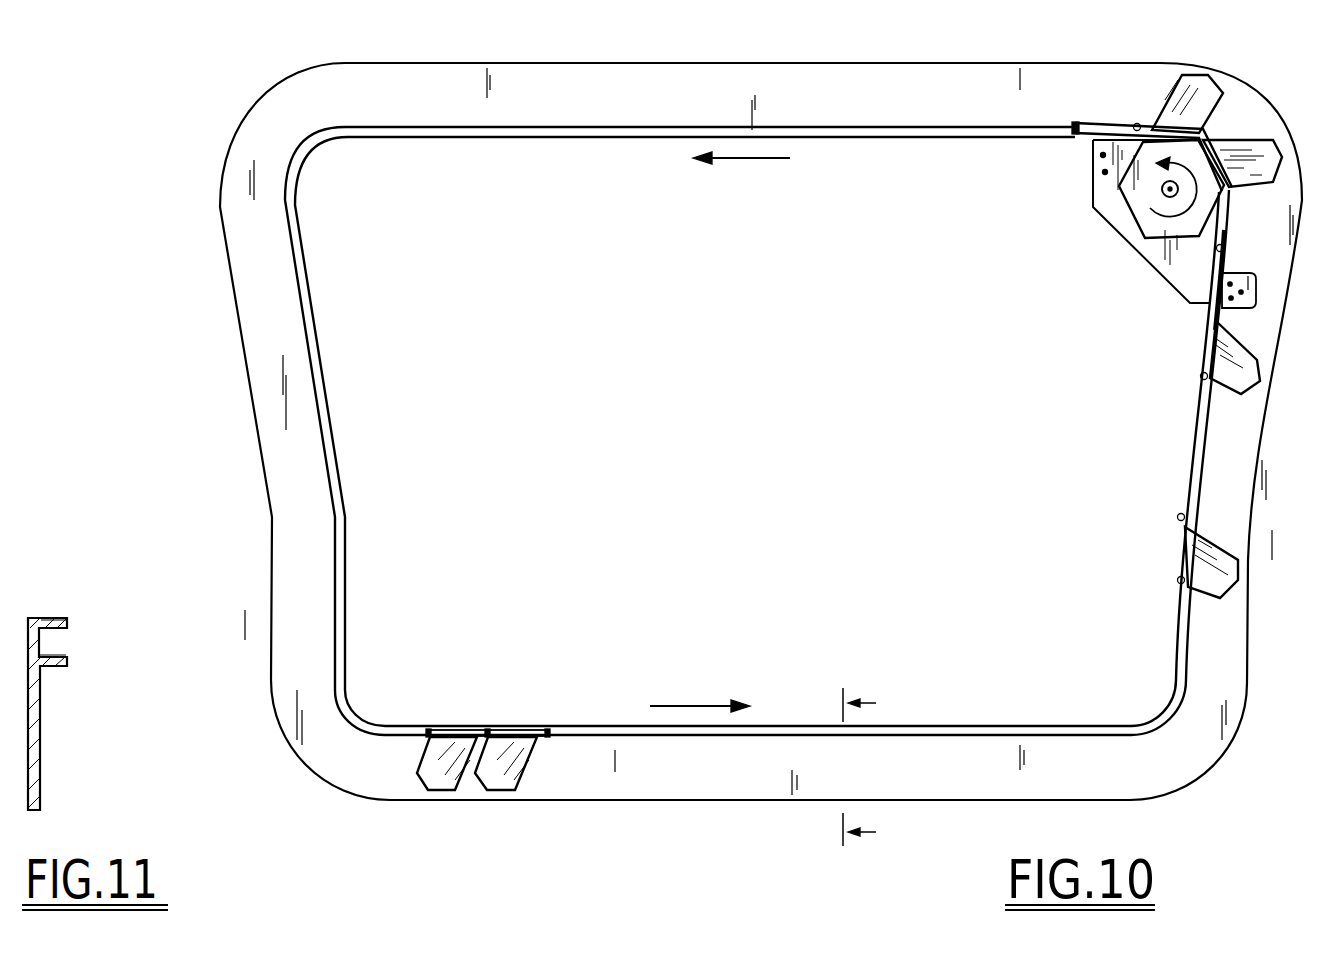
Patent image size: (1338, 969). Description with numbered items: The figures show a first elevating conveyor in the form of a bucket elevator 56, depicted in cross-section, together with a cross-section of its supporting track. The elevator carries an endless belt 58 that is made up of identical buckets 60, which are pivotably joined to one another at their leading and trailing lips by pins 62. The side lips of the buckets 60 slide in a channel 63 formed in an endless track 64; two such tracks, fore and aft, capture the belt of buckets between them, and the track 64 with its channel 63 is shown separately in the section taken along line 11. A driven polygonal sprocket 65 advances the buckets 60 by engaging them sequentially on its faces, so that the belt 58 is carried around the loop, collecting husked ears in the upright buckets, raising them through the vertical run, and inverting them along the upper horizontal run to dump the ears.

In FIG. 10, the bucket elevator 56 is at (722, 56).
In FIG. 10, the endless belt 58 is at (1187, 485).
In FIG. 10, the buckets 60 is at (1247, 125).
In FIG. 10, the pins 62 is at (549, 731).
In FIG. 10, the channel 63 is at (1026, 733).
In FIG. 11, the channel 63 is at (60, 642).
In FIG. 10, the endless track 64 is at (1118, 765).
In FIG. 11, the endless track 64 is at (40, 762).
In FIG. 10, the driven polygonal sprocket 65 is at (1143, 203).
In FIG. 10, the section line 11- 11 is at (844, 768).